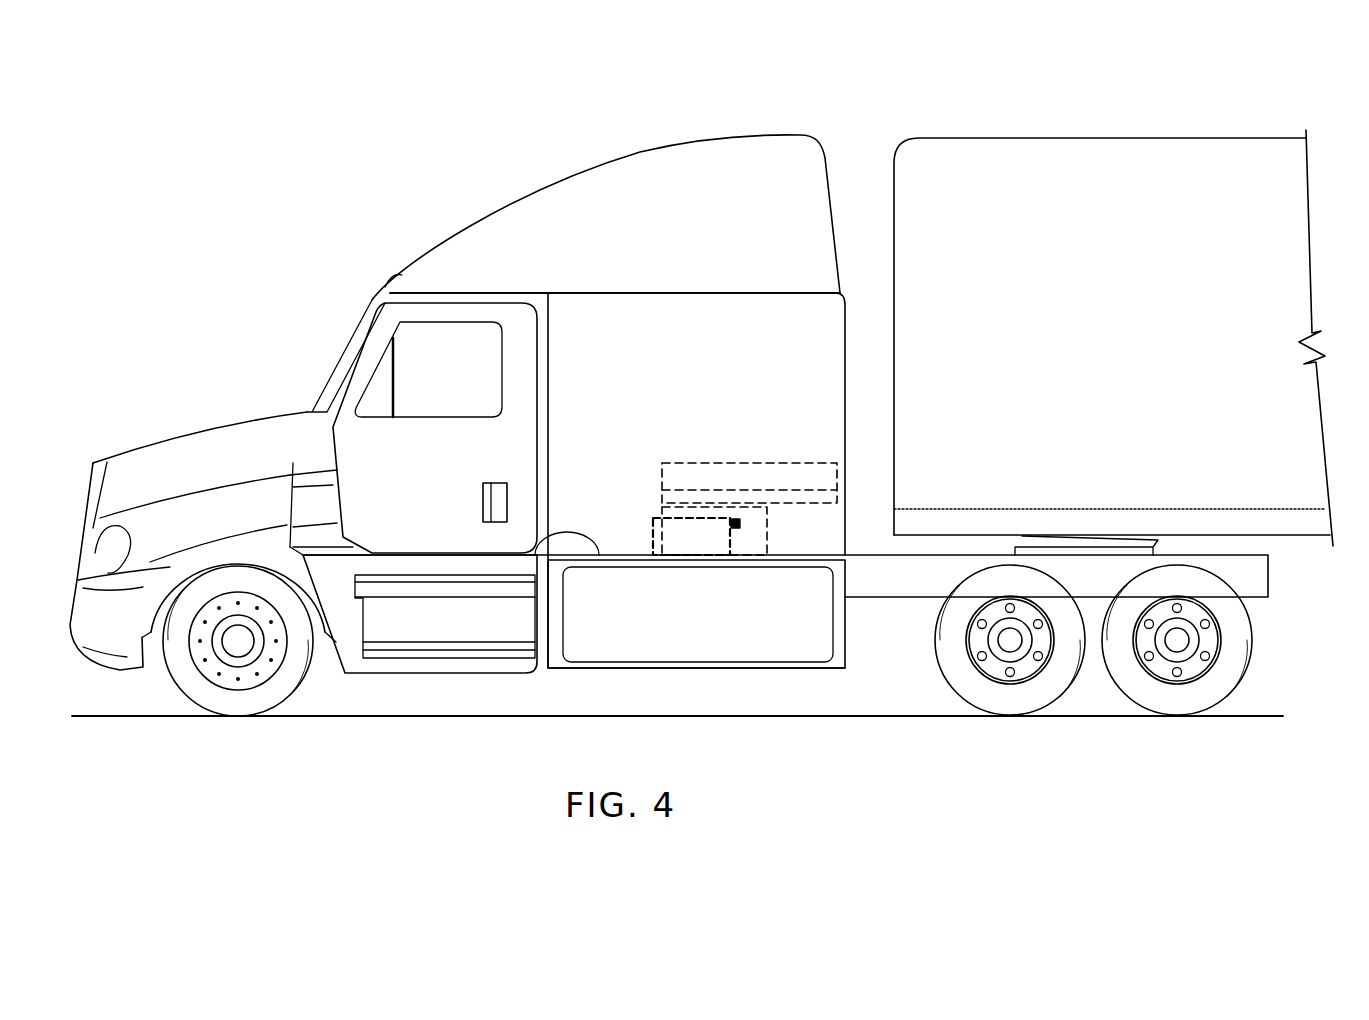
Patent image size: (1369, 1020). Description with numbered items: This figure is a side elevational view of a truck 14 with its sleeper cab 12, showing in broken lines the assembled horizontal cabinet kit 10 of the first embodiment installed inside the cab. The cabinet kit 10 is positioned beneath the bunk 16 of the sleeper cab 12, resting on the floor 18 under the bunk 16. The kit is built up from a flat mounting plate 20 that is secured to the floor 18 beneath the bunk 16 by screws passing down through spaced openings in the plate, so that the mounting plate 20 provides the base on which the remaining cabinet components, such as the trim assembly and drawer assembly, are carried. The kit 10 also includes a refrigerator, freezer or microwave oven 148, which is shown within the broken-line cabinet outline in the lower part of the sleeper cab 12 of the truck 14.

The horizontal cabinet kit 10 is at (725, 496).
The sleeper cab 12 is at (631, 318).
The truck 14 is at (215, 401).
The bunk 16 is at (705, 463).
The floor 18 is at (553, 533).
The flat mounting plate 20 is at (690, 550).
The refrigerator, freezer or microwave oven 148 is at (718, 532).